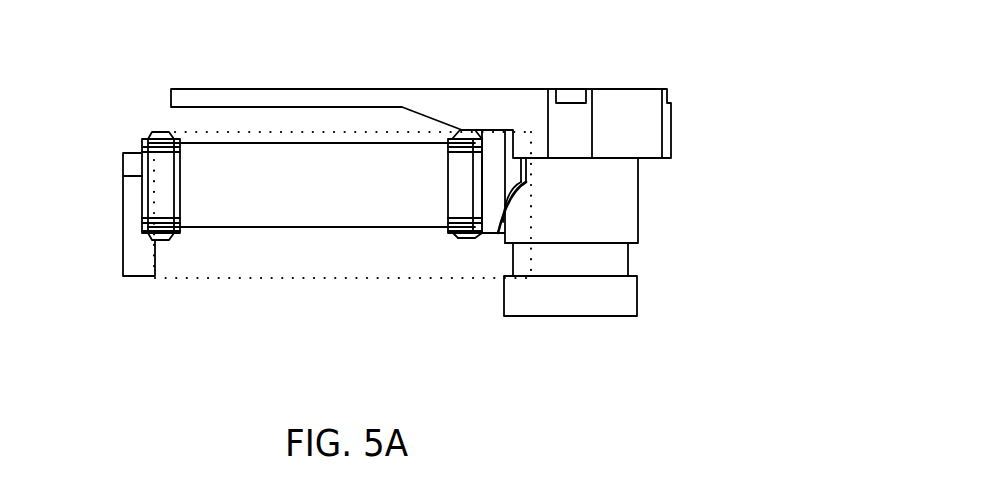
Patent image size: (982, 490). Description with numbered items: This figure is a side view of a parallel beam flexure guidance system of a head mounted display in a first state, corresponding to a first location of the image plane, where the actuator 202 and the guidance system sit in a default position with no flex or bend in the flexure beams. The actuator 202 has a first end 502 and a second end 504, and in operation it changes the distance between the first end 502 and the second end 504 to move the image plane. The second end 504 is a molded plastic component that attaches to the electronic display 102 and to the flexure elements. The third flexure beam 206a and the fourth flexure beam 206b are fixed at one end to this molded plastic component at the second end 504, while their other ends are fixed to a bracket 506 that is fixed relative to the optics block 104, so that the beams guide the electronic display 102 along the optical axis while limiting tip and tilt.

The electronic display 102 is at (190, 97).
The optics block 104 is at (287, 255).
The actuator 202 is at (726, 246).
The third flexure beam 206a is at (342, 143).
The fourth flexure beam 206b is at (213, 230).
The first end 502 is at (639, 305).
The second end 504 is at (638, 203).
The bracket 506 is at (123, 268).